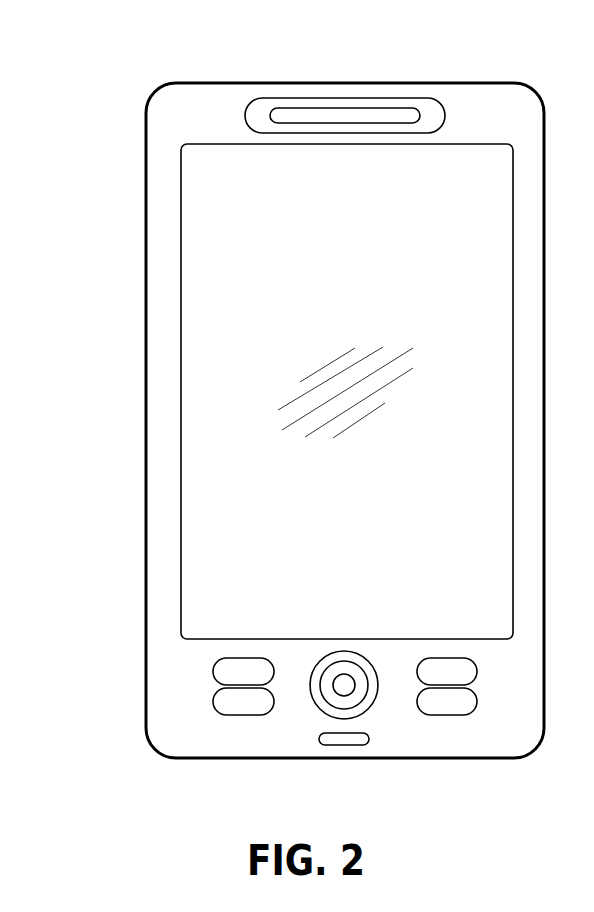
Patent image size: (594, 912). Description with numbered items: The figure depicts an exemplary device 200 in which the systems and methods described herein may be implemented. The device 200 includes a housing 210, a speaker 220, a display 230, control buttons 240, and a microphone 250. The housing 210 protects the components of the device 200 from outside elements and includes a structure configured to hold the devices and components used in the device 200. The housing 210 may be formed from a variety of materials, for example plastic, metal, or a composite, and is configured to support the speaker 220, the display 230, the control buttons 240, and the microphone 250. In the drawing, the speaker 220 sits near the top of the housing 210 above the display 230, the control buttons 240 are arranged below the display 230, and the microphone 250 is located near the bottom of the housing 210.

The device 200 is at (156, 49).
The housing 210 is at (146, 213).
The speaker 220 is at (245, 116).
The display 230 is at (202, 265).
The control buttons 240 is at (193, 703).
The microphone 250 is at (345, 745).